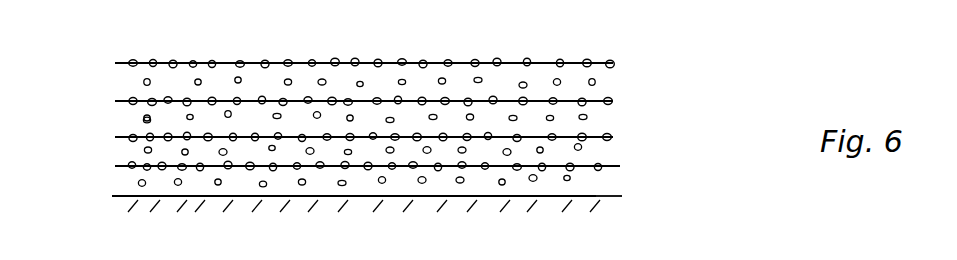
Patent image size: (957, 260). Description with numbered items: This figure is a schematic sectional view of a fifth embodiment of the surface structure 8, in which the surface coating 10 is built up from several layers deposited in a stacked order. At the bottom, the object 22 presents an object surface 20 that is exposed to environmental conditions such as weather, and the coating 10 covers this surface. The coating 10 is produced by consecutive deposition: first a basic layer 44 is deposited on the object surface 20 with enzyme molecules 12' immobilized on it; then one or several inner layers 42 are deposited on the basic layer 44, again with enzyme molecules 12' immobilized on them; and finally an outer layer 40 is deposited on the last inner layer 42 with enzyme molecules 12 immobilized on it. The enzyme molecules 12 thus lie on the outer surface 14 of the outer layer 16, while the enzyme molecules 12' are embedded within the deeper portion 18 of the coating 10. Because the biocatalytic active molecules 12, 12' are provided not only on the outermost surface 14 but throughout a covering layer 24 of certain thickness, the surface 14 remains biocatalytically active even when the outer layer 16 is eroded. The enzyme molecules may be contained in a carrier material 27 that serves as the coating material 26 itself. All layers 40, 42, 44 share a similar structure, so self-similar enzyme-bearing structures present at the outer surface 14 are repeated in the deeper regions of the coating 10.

The surface structure 8 is at (652, 49).
The surface coating 10 is at (515, 43).
The enzyme molecules 12 is at (372, 39).
The enzyme molecules 12' is at (178, 178).
The outer surface 14 is at (378, 57).
The outer layer 16 is at (704, 77).
The deeper portion 18 is at (704, 110).
The object surface 20 is at (399, 190).
The object 22 is at (474, 203).
The covering layer 24 is at (739, 85).
The coating material 26 is at (549, 184).
The carrier material 27 is at (588, 184).
The outer layer 40 is at (628, 86).
The inner layer 42 is at (617, 121).
The basic layer 44 is at (629, 184).